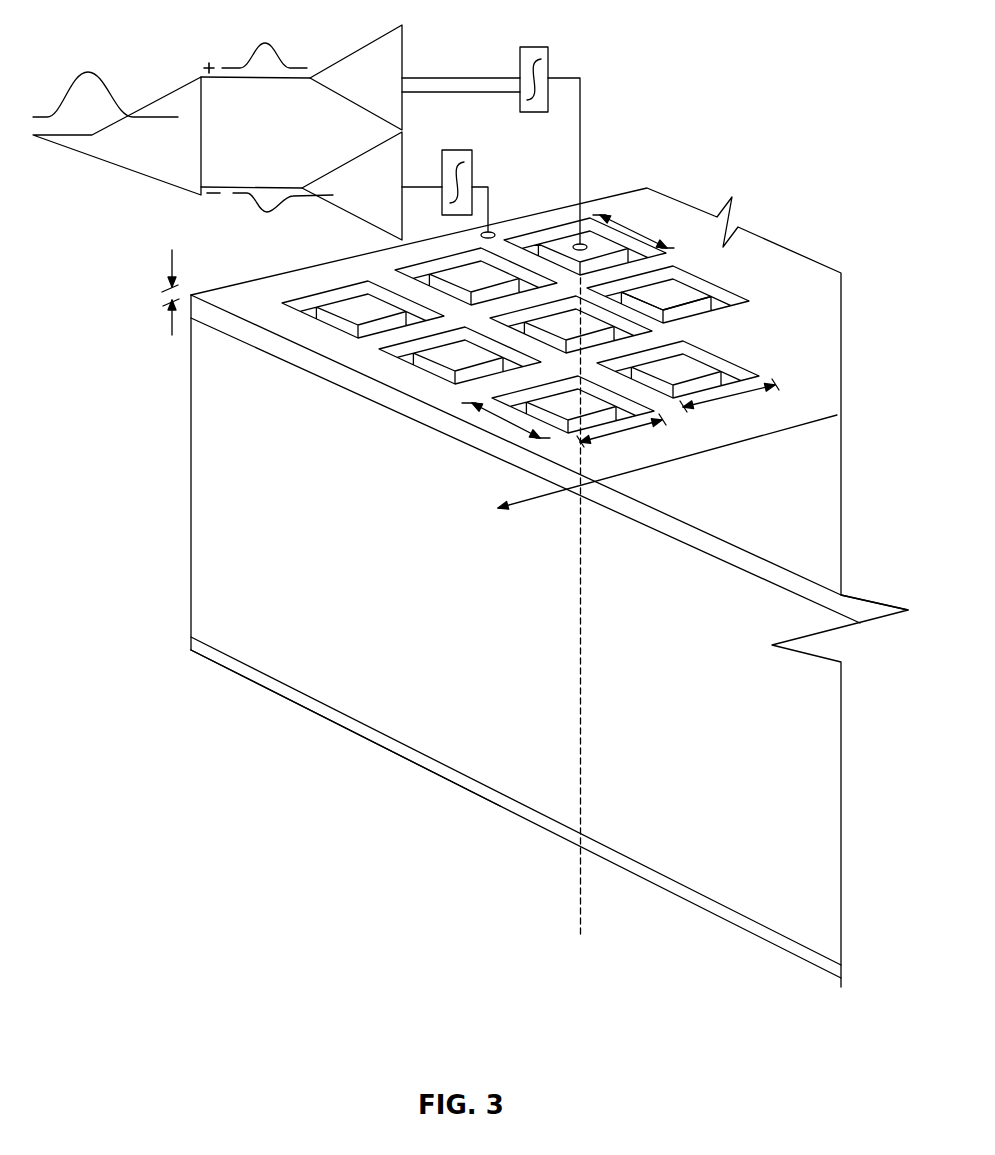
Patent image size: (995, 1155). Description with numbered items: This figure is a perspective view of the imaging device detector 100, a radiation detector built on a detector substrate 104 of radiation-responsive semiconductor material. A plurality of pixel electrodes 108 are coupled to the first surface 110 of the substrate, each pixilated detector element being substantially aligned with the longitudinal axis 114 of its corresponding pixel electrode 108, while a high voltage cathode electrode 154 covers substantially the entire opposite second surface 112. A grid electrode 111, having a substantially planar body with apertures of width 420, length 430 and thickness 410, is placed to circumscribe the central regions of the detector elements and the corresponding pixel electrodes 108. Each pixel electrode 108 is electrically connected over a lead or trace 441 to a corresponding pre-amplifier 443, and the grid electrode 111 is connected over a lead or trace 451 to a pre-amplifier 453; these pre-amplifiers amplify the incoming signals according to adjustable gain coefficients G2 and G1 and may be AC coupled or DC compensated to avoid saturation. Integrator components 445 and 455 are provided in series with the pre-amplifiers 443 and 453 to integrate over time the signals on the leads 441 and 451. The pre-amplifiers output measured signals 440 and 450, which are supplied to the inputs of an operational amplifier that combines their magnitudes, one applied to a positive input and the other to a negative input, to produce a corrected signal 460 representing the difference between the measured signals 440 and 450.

The imaging device detector 100 is at (776, 70).
The detector substrate 104 is at (549, 587).
The pixel electrode 108 is at (353, 310).
The first surface 110 is at (740, 570).
The grid electrode 111 is at (663, 333).
The second surface 112 is at (720, 902).
The longitudinal axis 114 is at (582, 765).
The high voltage cathode electrode 154 is at (369, 742).
The thickness 410 is at (167, 293).
The width 420 is at (638, 232).
The length 430 is at (612, 437).
The measured signal 440 is at (267, 212).
The lead or trace 441 is at (488, 206).
The pre-amplifier 443 is at (366, 153).
The integrator component 445 is at (450, 149).
The measured signal 450 is at (267, 43).
The lead or trace 451 is at (581, 108).
The pre-amplifier 453 is at (384, 36).
The integrator component 455 is at (537, 46).
The corrected signal 460 is at (88, 72).